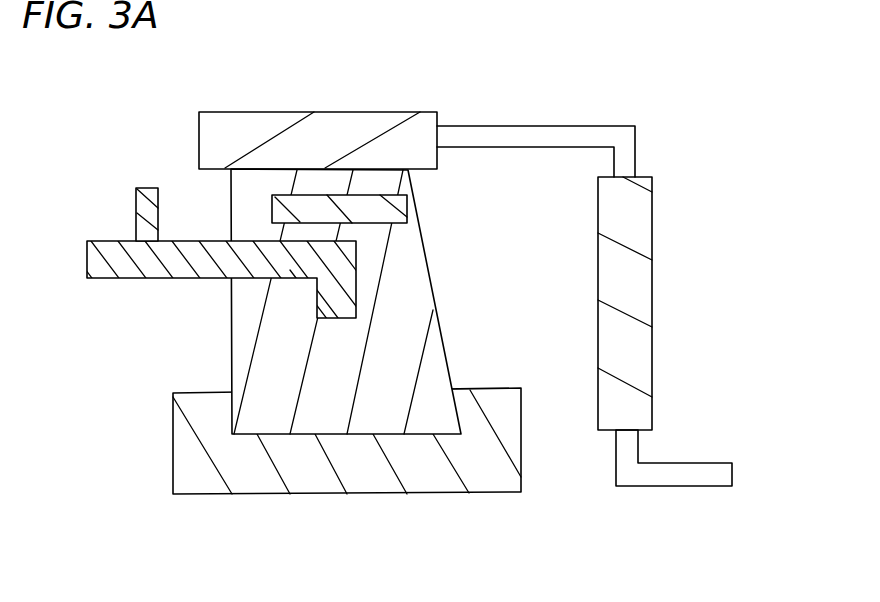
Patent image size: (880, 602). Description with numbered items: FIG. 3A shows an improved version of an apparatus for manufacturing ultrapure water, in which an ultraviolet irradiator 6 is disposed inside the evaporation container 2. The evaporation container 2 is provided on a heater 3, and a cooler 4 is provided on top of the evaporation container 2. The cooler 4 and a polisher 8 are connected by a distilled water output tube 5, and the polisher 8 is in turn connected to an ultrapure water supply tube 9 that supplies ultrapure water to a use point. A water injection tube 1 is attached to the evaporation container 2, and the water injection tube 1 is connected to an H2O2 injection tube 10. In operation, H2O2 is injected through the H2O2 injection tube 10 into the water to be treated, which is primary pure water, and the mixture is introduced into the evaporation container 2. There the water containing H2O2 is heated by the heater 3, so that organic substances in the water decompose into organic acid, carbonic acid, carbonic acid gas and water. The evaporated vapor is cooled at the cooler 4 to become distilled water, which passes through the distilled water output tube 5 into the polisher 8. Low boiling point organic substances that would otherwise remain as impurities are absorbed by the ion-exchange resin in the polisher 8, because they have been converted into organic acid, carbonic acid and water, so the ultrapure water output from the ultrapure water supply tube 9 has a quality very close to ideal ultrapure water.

The water injection tube 1 is at (154, 282).
The evaporation container 2 is at (428, 228).
The heater 3 is at (322, 498).
The cooler 4 is at (372, 110).
The distilled water output tube 5 is at (560, 122).
The ultraviolet irradiator 6 is at (400, 207).
The polisher 8 is at (653, 278).
The ultrapure water supply tube 9 is at (697, 460).
The H2O2 injection tube 10 is at (136, 206).